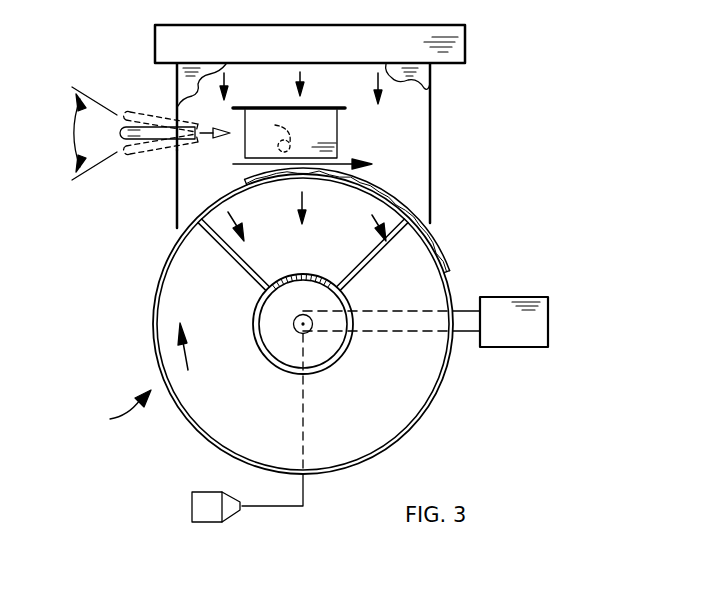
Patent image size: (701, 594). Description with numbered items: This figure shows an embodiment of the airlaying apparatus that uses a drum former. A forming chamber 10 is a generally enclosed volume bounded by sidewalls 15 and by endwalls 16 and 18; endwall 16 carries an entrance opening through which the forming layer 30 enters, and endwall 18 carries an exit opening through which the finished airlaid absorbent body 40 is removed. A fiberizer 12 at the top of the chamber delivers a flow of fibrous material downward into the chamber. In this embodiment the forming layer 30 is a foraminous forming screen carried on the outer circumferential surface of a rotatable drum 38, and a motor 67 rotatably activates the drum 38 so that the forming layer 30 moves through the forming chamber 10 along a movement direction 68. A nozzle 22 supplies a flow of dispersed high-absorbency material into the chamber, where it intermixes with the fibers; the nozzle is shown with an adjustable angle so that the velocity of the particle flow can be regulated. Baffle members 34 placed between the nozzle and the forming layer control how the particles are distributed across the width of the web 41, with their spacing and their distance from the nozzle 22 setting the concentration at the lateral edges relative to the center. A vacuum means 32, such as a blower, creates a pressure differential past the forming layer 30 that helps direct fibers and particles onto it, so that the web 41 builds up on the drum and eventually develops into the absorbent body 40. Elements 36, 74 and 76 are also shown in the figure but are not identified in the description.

The forming chamber 10 is at (177, 84).
The fiberizer 12 is at (466, 26).
The sidewalls 15 is at (432, 74).
The endwall 16 is at (177, 205).
The endwall 18 is at (432, 176).
The nozzle 22 is at (172, 160).
The forming layer 30 is at (153, 284).
The vacuum means 32 is at (549, 330).
The baffle members 34 is at (336, 118).
The hub and spokes 36 is at (245, 217).
The rotatable drum 38 is at (115, 410).
The airlaid absorbent body 40 is at (452, 264).
The web 41 is at (372, 181).
The motor 67 is at (192, 496).
The movement direction 68 is at (233, 165).
The hopper lid 74 is at (338, 106).
The particle flow 76 is at (271, 132).